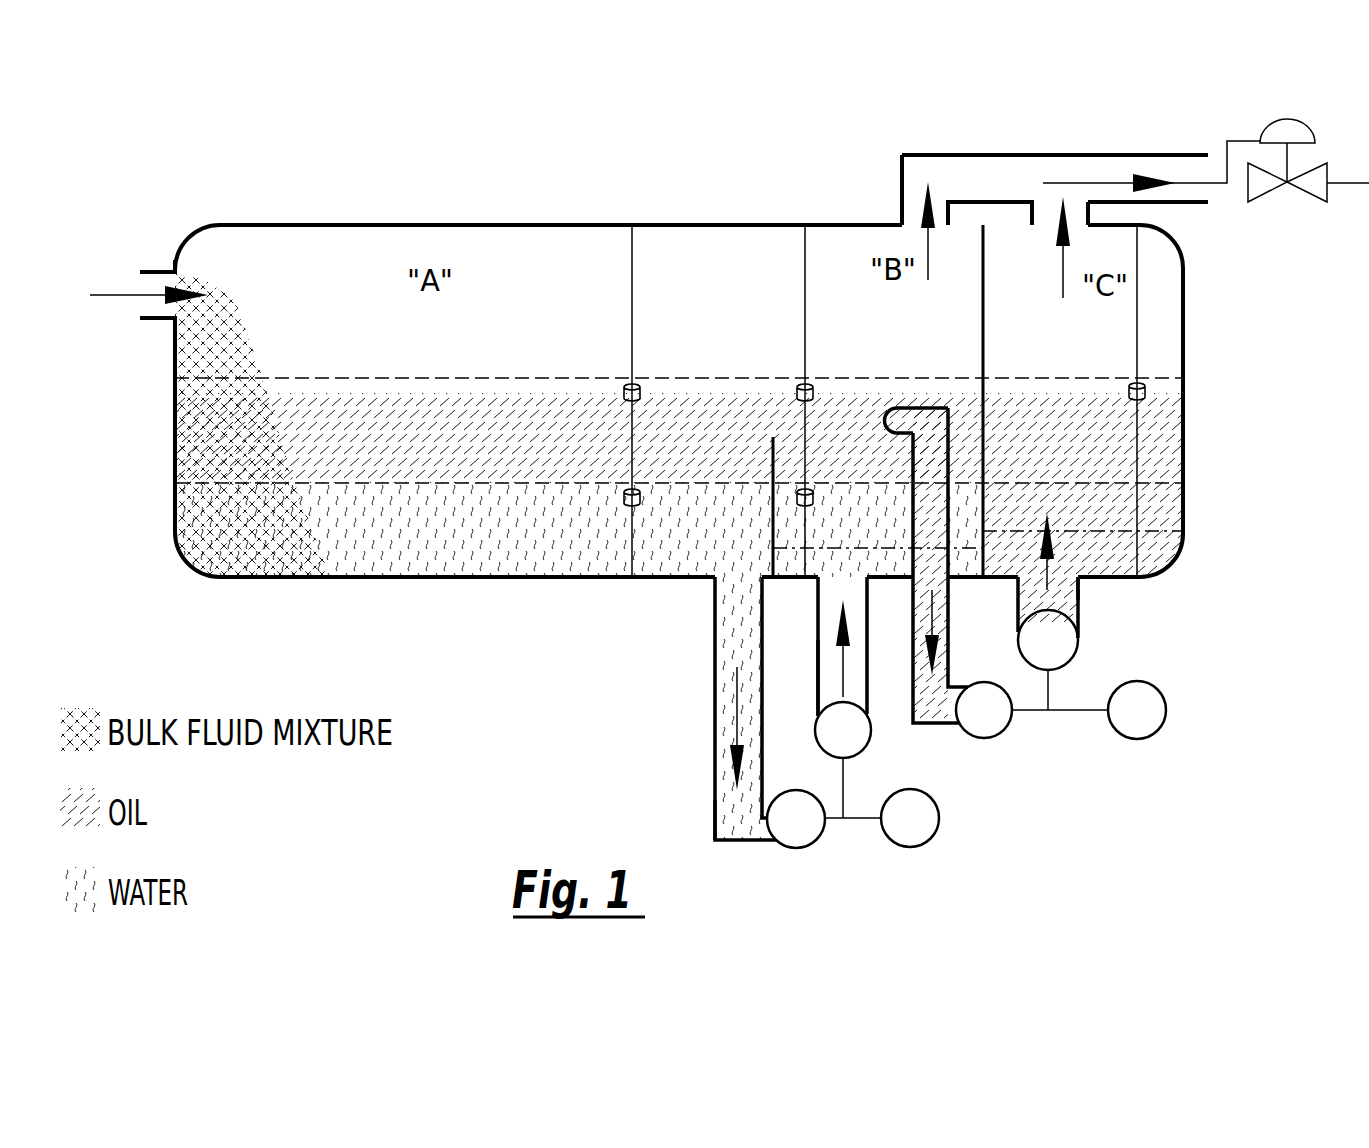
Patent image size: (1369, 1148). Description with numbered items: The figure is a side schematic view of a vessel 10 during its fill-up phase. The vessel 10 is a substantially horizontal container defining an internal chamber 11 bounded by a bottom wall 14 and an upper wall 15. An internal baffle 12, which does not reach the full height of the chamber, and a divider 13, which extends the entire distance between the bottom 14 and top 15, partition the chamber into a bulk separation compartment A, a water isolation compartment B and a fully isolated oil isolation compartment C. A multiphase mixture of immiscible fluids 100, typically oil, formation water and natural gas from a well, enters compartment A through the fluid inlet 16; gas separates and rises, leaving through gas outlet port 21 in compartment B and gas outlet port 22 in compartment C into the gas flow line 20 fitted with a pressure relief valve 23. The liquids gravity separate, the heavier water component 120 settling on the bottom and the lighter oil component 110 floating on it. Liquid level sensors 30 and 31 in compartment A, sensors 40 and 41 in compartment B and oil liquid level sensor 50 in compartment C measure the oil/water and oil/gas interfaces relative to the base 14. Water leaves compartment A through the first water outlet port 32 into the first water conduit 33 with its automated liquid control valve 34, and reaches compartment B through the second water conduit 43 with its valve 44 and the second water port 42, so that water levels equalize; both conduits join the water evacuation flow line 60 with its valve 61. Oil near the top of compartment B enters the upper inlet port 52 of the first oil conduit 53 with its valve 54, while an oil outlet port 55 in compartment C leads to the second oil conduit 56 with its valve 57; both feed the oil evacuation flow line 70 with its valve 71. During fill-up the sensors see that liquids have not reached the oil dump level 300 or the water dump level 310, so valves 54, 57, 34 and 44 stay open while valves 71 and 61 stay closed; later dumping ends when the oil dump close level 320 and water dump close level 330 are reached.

The vessel 10 is at (177, 218).
The internal chamber 11 is at (636, 389).
The internal baffle 12 is at (770, 445).
The divider 13 is at (985, 272).
The bottom wall 14 is at (282, 580).
The upper wall 15 is at (657, 225).
The fluid inlet 16 is at (182, 283).
The gas flow line 20 is at (1105, 165).
The gas outlet port 21 is at (934, 207).
The gas outlet port 22 is at (1050, 215).
The pressure relief valve 23 is at (1285, 132).
The liquid level sensor 30 is at (628, 508).
The liquid level sensor 31 is at (626, 382).
The first water outlet port 32 is at (733, 583).
The first water conduit 33 is at (724, 740).
The automated liquid control valve 34 is at (790, 848).
The liquid level sensor 40 is at (799, 508).
The liquid level sensor 41 is at (798, 384).
The second water port 42 is at (838, 583).
The second water conduit 43 is at (817, 676).
The automated liquid control valve 44 is at (866, 737).
The oil liquid level sensor 50 is at (1147, 392).
The upper inlet port 52 is at (893, 425).
The first oil conduit 53 is at (938, 447).
The automated liquid control valve 54 is at (987, 740).
The oil outlet port 55 is at (1064, 590).
The second oil conduit 56 is at (1018, 598).
The automated liquid control valve 57 is at (1076, 645).
The water evacuation flow line 60 is at (852, 822).
The automated liquid control valve 61 is at (918, 844).
The oil evacuation flow line 70 is at (1068, 712).
The automated liquid control valve 71 is at (1141, 740).
The multiphase mixture of immiscible fluids 100 is at (222, 358).
The oil component 110 is at (452, 412).
The water component 120 is at (434, 548).
The oil dump level 300 is at (1162, 378).
The water dump level 310 is at (1160, 483).
The oil dump close level 320 is at (1158, 532).
The water dump close level 330 is at (776, 582).